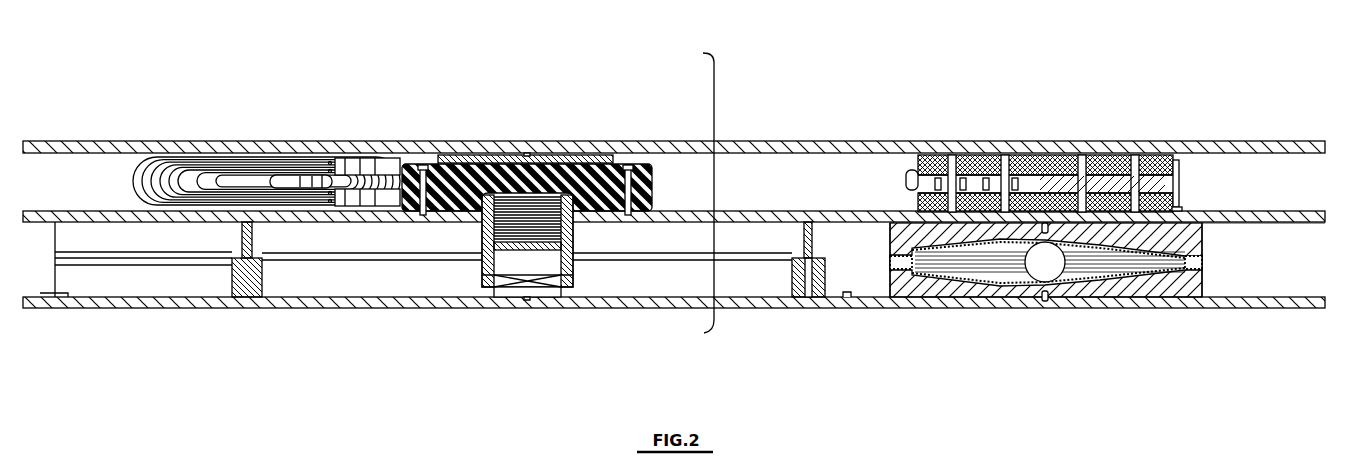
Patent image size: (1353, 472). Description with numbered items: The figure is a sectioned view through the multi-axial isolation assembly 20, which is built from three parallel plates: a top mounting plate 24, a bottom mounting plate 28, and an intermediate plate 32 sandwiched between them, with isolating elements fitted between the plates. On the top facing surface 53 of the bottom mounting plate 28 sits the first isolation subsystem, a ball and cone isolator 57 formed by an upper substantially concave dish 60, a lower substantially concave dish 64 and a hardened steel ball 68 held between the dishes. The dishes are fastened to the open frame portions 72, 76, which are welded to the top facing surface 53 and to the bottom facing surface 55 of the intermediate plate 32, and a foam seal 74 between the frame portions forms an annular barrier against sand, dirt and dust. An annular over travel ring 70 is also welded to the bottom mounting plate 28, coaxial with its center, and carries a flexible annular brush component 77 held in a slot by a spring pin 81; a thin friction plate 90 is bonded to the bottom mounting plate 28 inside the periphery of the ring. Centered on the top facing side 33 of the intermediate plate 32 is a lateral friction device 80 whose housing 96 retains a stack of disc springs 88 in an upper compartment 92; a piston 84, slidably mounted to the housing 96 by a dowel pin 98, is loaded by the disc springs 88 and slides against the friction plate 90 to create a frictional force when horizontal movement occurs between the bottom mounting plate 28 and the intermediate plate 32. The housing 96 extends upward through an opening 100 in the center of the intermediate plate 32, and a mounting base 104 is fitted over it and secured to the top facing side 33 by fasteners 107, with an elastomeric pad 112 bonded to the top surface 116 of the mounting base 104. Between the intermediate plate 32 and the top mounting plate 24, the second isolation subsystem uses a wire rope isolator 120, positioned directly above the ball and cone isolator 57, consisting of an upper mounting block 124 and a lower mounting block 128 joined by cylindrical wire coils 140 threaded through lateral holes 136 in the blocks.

The multi-axial isolation assembly 20 is at (527, 66).
The top mounting plate 24 is at (788, 142).
The bottom mounting plate 28 is at (917, 309).
The intermediate plate 32 is at (1228, 226).
The top facing side of the intermediate plate 33 is at (1258, 212).
The top facing surface of the bottom mounting plate 53 is at (847, 296).
The bottom facing surface of the intermediate mounting plate 55 is at (1288, 225).
The ball and cone isolator 57 is at (1204, 299).
The upper substantially concave dish 60 is at (1180, 219).
The lower substantially concave dish 64 is at (1157, 286).
The hardened steel ball 68 is at (1049, 270).
The over travel ring 70 is at (233, 291).
The upper frame portion 72 is at (890, 240).
The foam seal 74 is at (890, 262).
The lower frame portion 76 is at (993, 294).
The flexible annular brush component 77 is at (804, 243).
The lateral friction device 80 is at (715, 195).
The spring pin 81 is at (263, 266).
The piston 84 is at (518, 293).
The disc springs 88 is at (573, 240).
The friction plate 90 is at (306, 299).
The upper compartment 92 is at (548, 262).
The housing 96 is at (490, 276).
The dowel pin 98 is at (551, 287).
The opening 100 is at (566, 156).
The mounting base 104 is at (580, 163).
The fasteners 107 is at (629, 165).
The elastomeric pad 112 is at (510, 157).
The top surface of the mounting base 116 is at (405, 165).
The wire rope isolator 120 is at (168, 150).
The upper mounting block 124 is at (1180, 157).
The lower mounting block 128 is at (917, 157).
The lateral holes 136 is at (313, 158).
The cylindrical wire coils 140 is at (233, 162).